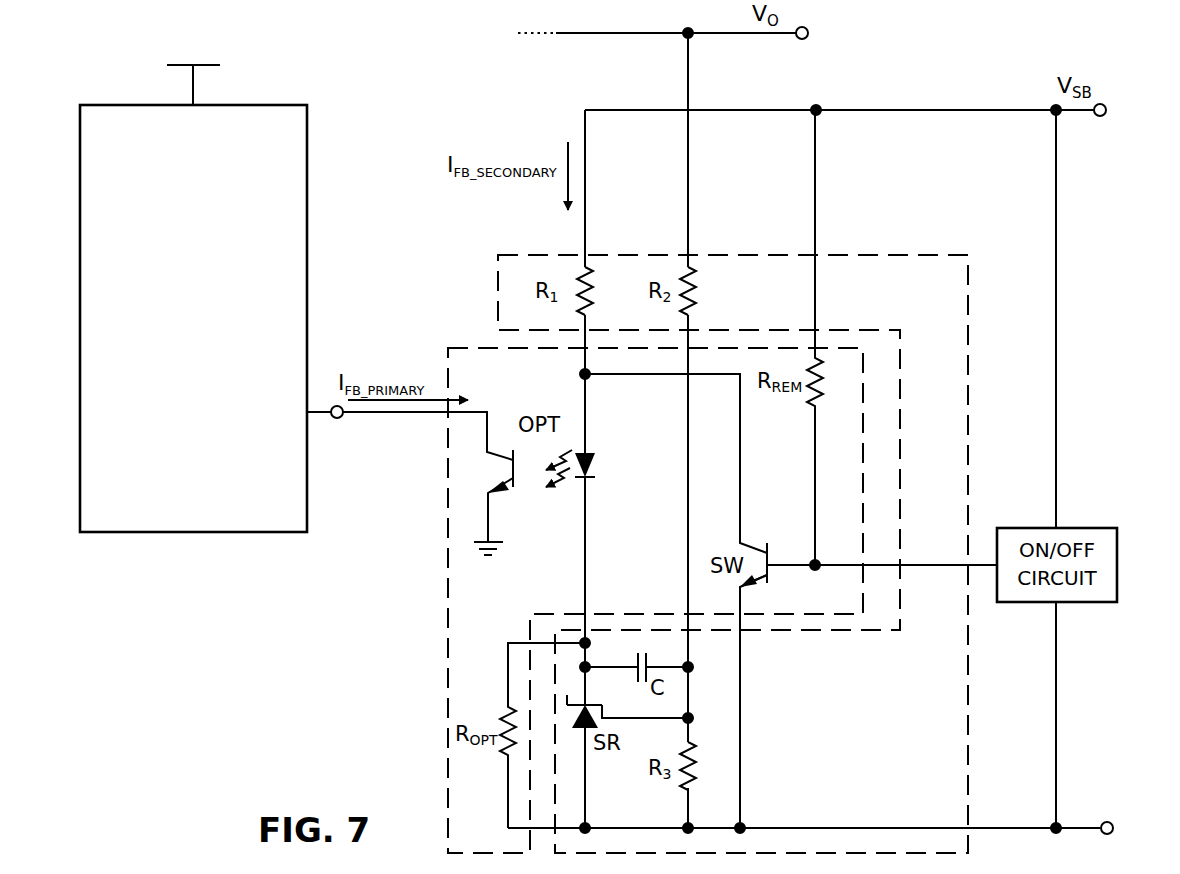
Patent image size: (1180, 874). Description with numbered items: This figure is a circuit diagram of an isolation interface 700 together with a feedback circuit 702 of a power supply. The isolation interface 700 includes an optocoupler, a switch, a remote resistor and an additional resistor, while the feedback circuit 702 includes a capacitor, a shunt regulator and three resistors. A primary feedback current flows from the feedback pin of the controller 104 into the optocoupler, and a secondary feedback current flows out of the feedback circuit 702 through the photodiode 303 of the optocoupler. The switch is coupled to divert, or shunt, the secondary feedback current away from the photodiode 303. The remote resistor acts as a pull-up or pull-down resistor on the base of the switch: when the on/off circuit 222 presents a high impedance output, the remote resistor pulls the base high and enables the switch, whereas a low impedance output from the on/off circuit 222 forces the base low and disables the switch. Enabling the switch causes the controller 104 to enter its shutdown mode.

The controller 104 is at (183, 275).
The isolation interface 700 is at (445, 660).
The feedback circuit 702 is at (882, 243).
The photodiode 303 is at (600, 468).
The on/off circuit 222 is at (1077, 625).